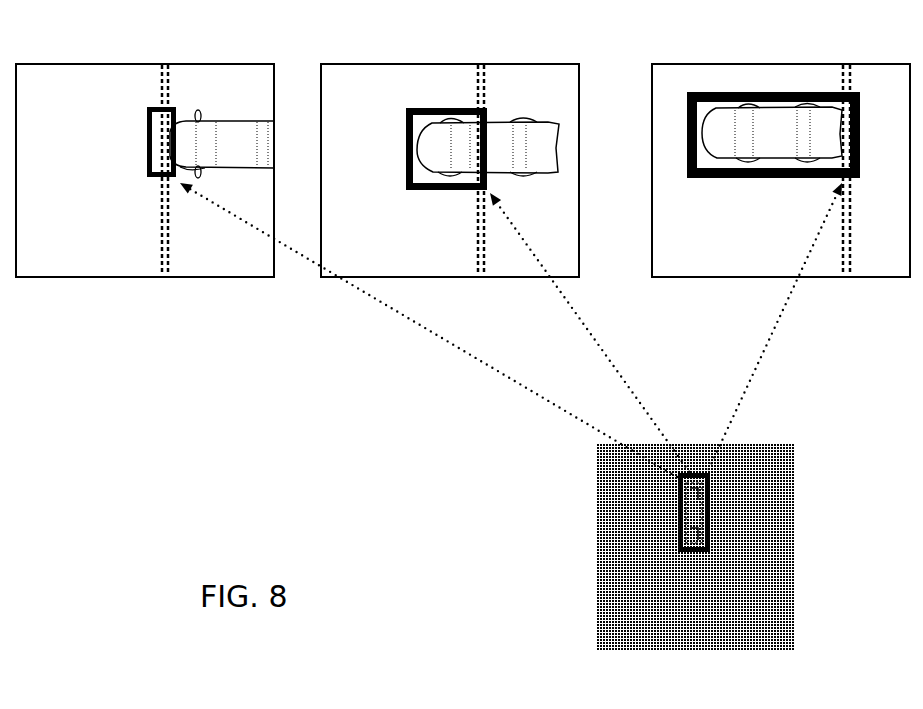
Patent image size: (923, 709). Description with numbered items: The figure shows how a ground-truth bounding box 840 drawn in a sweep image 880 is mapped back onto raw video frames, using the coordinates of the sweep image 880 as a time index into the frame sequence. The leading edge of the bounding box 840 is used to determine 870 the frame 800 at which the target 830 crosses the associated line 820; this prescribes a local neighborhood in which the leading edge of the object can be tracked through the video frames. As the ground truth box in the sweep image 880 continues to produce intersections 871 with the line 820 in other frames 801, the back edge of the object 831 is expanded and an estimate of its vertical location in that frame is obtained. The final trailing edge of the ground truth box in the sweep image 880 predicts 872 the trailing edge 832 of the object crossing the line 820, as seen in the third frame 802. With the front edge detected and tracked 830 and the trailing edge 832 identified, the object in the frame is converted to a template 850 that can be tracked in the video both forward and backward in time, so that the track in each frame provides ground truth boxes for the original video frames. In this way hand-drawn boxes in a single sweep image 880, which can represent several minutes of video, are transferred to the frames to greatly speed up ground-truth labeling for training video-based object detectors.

The frame 800 is at (145, 154).
The other frame 801 is at (450, 155).
The third image frame of vehicle 802 is at (781, 155).
The line 820 is at (193, 170).
The target 830 is at (141, 130).
The object 831 is at (474, 133).
The trailing edge 832 is at (873, 168).
The bounding box 840 is at (724, 499).
The template 850 is at (773, 153).
The determination of frame 870 is at (428, 330).
The intersections 871 is at (591, 335).
The prediction of trailing edge 872 is at (774, 329).
The sweep image 880 is at (696, 570).